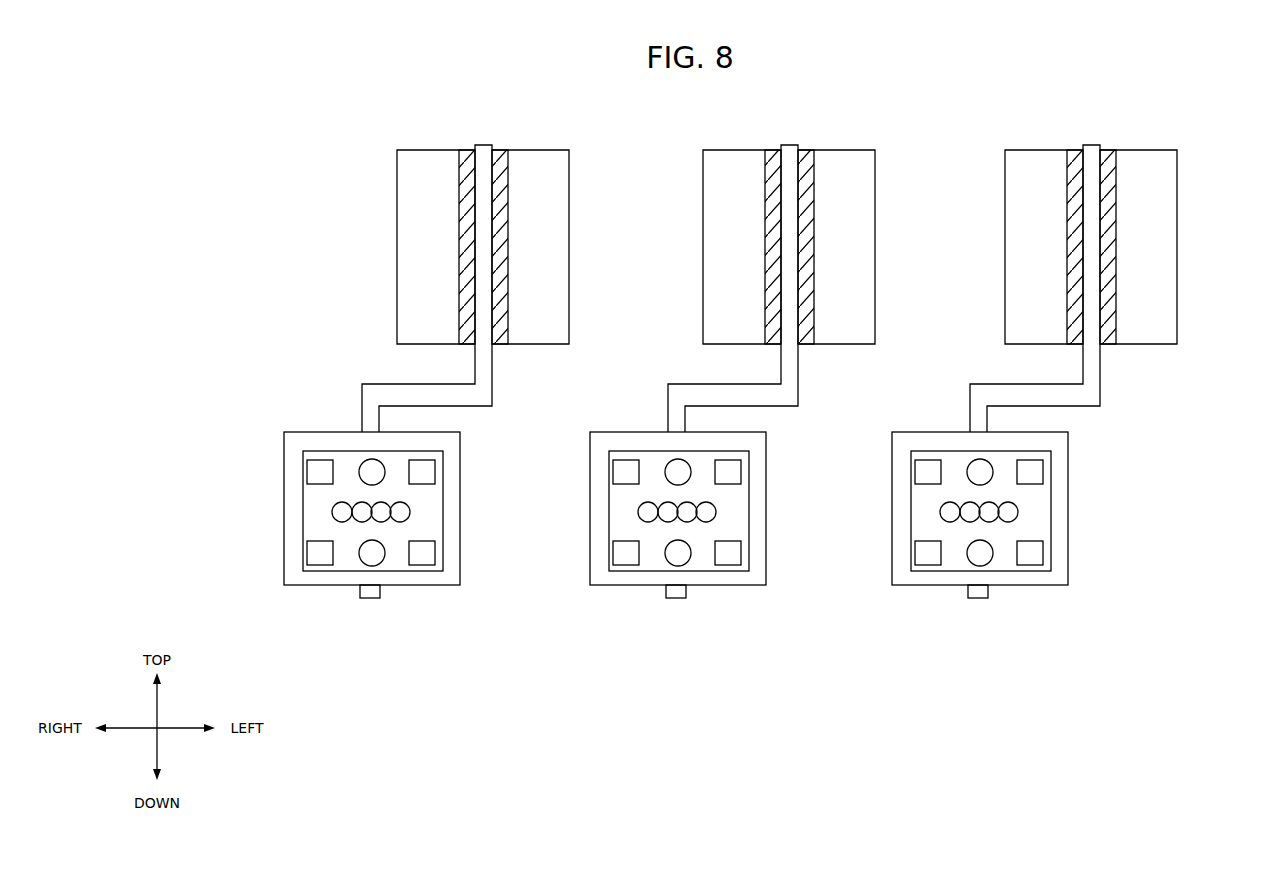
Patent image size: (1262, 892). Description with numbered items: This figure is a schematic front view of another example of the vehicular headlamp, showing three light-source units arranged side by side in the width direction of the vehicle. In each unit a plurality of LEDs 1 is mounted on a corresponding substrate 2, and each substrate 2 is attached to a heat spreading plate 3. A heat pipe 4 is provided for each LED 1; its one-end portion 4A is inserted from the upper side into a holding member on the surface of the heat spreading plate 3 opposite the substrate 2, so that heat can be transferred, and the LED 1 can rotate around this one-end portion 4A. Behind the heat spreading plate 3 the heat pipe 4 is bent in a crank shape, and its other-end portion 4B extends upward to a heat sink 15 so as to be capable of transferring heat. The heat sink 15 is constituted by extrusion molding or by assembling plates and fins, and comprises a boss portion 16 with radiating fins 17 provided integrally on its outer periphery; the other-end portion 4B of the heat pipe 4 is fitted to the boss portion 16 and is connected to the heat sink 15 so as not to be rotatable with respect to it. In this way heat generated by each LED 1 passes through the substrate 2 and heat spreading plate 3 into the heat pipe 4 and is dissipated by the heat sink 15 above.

The LED 1 is at (358, 522).
The substrate 2 is at (313, 510).
The heat spreading plate 3 is at (290, 560).
The heat pipe 4 is at (492, 393).
The one-end portion of the heat pipe 4A is at (377, 600).
The other-end portion of the heat pipe 4B is at (489, 145).
The heat sink 15 is at (385, 134).
The boss portion 16 is at (462, 220).
The radiating fin 17 is at (413, 288).